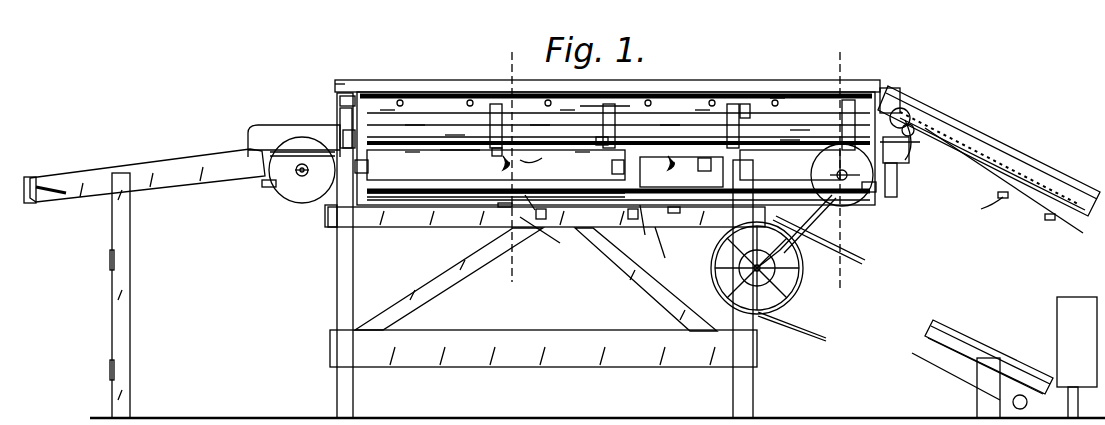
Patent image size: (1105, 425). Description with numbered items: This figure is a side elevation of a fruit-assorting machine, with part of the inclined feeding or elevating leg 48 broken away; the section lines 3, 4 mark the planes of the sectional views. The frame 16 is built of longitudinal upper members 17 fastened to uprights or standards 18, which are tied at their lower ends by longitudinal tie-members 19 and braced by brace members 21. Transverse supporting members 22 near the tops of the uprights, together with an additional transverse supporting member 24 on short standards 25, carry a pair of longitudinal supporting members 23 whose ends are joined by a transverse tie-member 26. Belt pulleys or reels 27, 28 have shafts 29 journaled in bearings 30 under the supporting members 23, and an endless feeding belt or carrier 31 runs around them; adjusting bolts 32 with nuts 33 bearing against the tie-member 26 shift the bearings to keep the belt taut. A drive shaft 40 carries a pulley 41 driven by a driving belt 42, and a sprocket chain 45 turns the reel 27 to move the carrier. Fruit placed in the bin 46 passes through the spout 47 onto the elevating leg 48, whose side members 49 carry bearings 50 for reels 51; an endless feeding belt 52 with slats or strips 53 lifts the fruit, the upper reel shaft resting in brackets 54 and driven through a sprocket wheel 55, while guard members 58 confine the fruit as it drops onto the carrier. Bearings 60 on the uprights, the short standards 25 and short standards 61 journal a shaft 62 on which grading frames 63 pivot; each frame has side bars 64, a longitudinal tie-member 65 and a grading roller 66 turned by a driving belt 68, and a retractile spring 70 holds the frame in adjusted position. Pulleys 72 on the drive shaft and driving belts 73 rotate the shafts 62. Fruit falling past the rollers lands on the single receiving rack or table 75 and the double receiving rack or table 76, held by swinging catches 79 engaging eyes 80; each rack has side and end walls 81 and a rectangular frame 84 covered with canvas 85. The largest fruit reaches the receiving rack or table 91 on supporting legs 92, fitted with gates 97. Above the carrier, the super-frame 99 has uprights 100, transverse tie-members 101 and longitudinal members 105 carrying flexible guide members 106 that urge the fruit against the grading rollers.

The section line 3 is at (513, 168).
The section line 4 is at (842, 172).
The frame 16 is at (330, 227).
The longitudinal upper members 17 is at (440, 217).
The uprights or standards 18 is at (337, 290).
The longitudinal tie-members 19 is at (540, 368).
The brace members 21 is at (440, 290).
The transverse supporting members 22 is at (357, 170).
The longitudinal supporting members 23 is at (460, 150).
The transverse supporting member 24 is at (612, 168).
The short standards 25 is at (652, 231).
The transverse tie-member 26 is at (897, 172).
The belt pulley or reel 27 is at (848, 204).
The belt pulley or reel 28 is at (290, 180).
The shafts 29 is at (300, 175).
The bearings 30 is at (262, 184).
The endless feeding belt or carrier 31 is at (490, 207).
The adjusting bolts 32 is at (298, 160).
The nuts 33 is at (925, 138).
The drive shaft 40 is at (752, 272).
The pulley 41 is at (785, 300).
The driving belt 42 is at (780, 325).
The sprocket chain 45 is at (808, 226).
The bin 46 is at (1075, 298).
The spout 47 is at (1015, 352).
The inclined feeding or elevating leg 48 is at (989, 240).
The side members 49 is at (1058, 190).
The bearings 50 is at (905, 108).
The reel 51 is at (940, 128).
The endless feeding belt 52 is at (1078, 232).
The slats or strips 53 is at (1000, 395).
The brackets 54 is at (914, 126).
The sprocket wheel 55 is at (1010, 208).
The guard members 58 is at (892, 98).
The bearings 60 is at (344, 138).
The short standards 61 is at (920, 142).
The shaft 62 is at (536, 160).
The grading frames 63 is at (415, 124).
The side bars 64 is at (496, 104).
The longitudinal tie-member 65 is at (412, 152).
The grading roller 66 is at (387, 110).
The driving belt 68 is at (495, 153).
The retractile spring 70 is at (455, 134).
The pulley 72 is at (790, 280).
The driving belt 73 is at (795, 256).
The single receiving rack or table 75 is at (674, 218).
The double receiving rack or table 76 is at (500, 216).
The swinging catch 79 is at (597, 153).
The cooperating part or eye 80 is at (602, 237).
The side and end walls 81 is at (420, 207).
The rectangular frame 84 is at (546, 243).
The canvas 85 is at (536, 260).
The receiving rack or table 91 is at (200, 180).
The supporting legs 92 is at (130, 283).
The gates 97 is at (30, 203).
The super-frame 99 is at (740, 108).
The uprights 100 is at (347, 98).
The transverse tie-members 101 is at (336, 84).
The longitudinal members 105 is at (370, 82).
The flexible guide members 106 is at (605, 99).